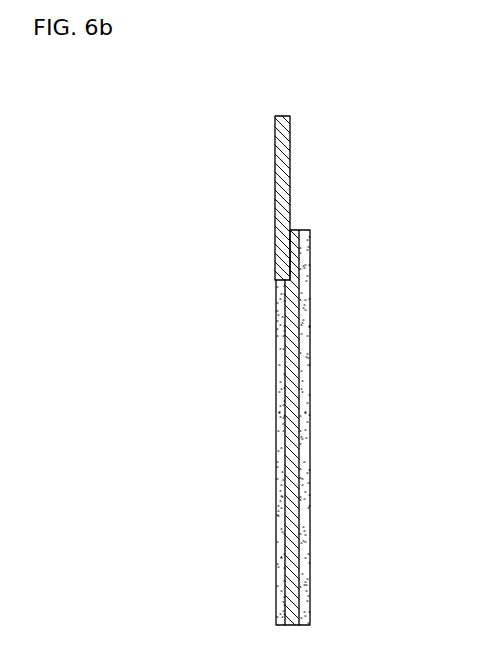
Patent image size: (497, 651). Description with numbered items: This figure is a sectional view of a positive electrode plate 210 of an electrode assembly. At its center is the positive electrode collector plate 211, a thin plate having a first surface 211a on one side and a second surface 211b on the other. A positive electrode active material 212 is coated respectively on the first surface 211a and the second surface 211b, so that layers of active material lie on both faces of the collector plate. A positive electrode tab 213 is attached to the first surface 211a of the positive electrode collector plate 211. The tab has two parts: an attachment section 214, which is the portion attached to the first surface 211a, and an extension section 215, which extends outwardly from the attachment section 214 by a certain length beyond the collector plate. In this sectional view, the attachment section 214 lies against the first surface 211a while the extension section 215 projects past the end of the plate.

The positive electrode plate 210 is at (399, 71).
The positive electrode collector plate 211 is at (292, 405).
The first surface 211a is at (281, 308).
The second surface 211b is at (304, 300).
The positive electrode active material 212 is at (300, 477).
The positive electrode tab 213 is at (200, 173).
The attachment section 214 is at (278, 251).
The extension section 215 is at (275, 180).